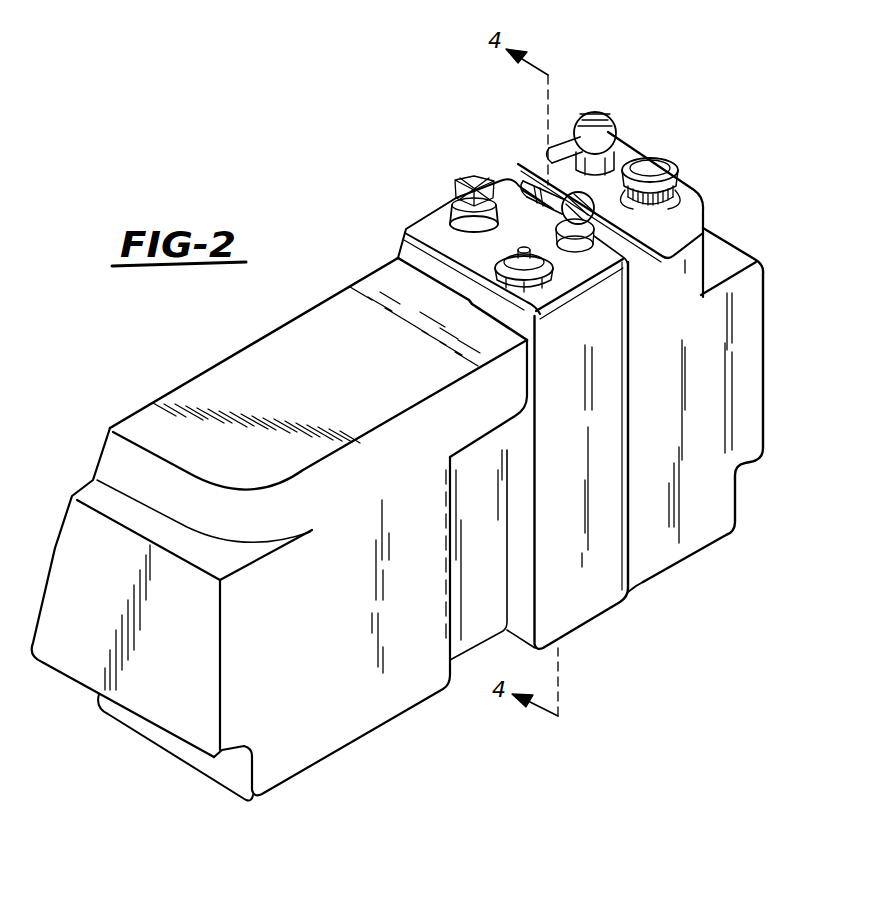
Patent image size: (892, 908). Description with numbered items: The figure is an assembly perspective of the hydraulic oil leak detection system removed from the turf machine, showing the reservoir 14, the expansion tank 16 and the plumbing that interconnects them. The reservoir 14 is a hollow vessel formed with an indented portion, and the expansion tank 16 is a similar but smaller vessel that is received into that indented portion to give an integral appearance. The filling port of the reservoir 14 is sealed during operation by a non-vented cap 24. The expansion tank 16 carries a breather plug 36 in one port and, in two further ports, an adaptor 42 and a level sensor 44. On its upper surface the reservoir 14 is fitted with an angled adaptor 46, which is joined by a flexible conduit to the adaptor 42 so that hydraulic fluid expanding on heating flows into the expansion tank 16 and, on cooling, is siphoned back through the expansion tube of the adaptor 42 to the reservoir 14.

The reservoir 14 is at (213, 390).
The expansion tank 16 is at (628, 565).
The non-vented cap 24 is at (664, 154).
The breather plug 36 is at (477, 178).
The adaptor 42 is at (578, 228).
The level sensor 44 is at (533, 275).
The angled adaptor 46 is at (596, 112).